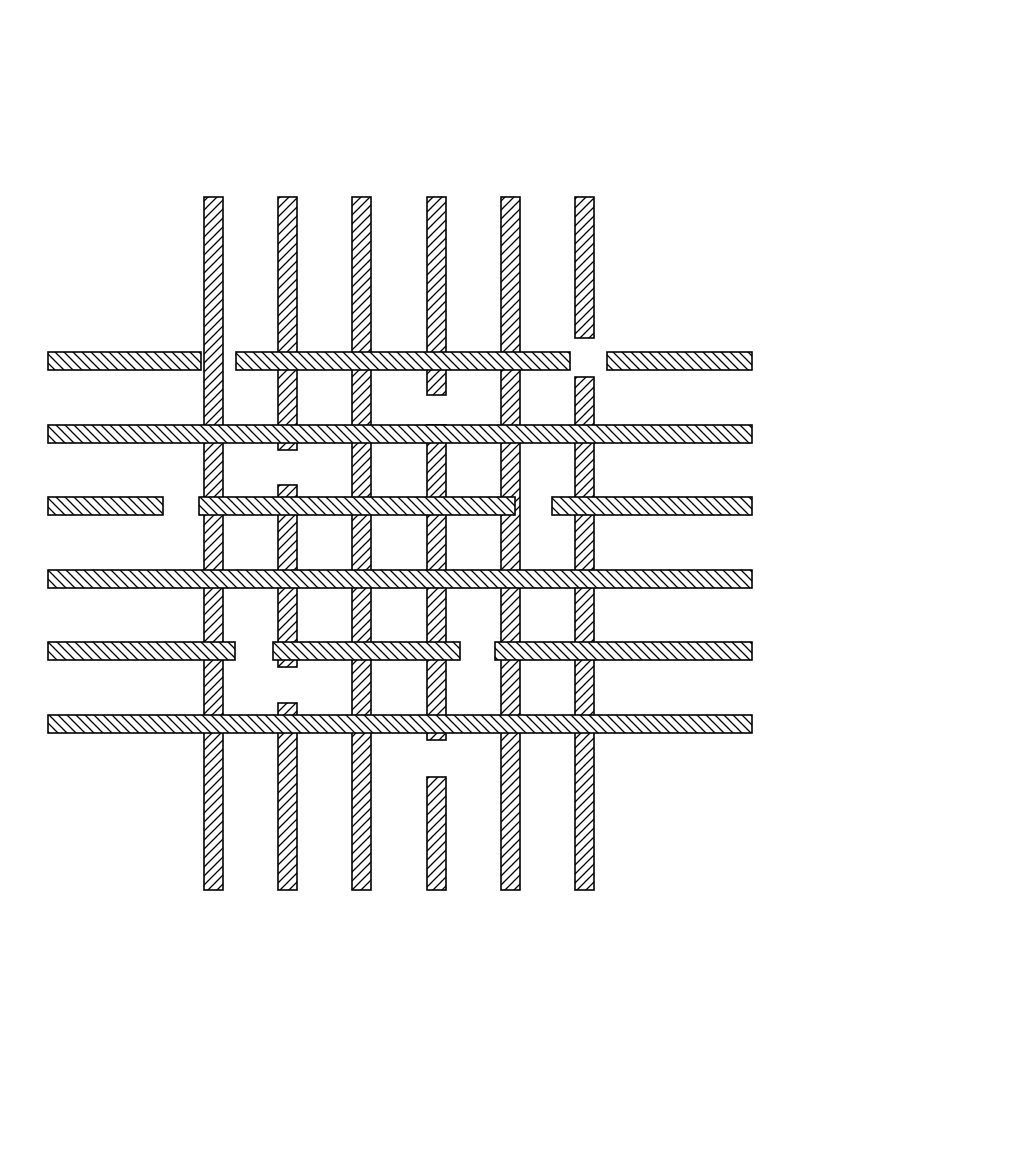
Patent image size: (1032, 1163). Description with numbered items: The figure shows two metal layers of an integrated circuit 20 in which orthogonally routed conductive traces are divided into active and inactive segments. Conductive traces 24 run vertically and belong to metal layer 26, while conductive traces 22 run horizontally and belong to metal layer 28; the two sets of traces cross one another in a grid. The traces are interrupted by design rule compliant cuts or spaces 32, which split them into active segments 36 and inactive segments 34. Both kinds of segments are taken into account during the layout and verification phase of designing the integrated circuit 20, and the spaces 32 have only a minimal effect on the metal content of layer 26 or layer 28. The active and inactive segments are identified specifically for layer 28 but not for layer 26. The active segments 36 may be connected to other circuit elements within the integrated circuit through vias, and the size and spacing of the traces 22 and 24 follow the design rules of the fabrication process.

The integrated circuit 20 is at (802, 73).
The conductive traces 22 is at (745, 352).
The conductive traces 24 is at (208, 197).
The metal layer 26 is at (204, 88).
The metal layer 28 is at (835, 343).
The design rule compliant spaces 32 is at (614, 336).
The inactive segments 34 is at (107, 352).
The active segments 36 is at (270, 352).